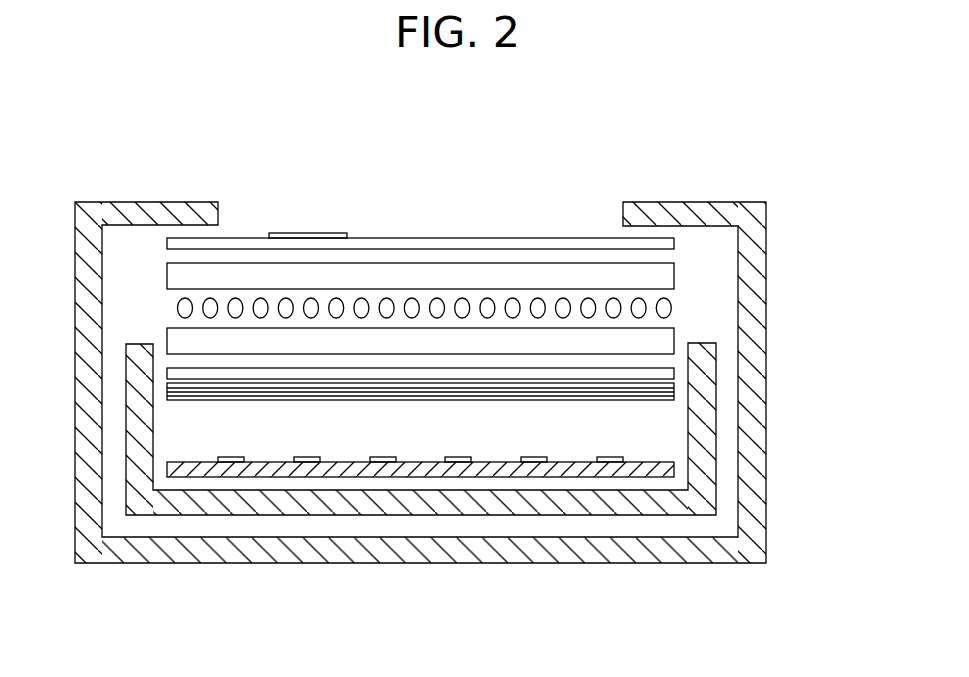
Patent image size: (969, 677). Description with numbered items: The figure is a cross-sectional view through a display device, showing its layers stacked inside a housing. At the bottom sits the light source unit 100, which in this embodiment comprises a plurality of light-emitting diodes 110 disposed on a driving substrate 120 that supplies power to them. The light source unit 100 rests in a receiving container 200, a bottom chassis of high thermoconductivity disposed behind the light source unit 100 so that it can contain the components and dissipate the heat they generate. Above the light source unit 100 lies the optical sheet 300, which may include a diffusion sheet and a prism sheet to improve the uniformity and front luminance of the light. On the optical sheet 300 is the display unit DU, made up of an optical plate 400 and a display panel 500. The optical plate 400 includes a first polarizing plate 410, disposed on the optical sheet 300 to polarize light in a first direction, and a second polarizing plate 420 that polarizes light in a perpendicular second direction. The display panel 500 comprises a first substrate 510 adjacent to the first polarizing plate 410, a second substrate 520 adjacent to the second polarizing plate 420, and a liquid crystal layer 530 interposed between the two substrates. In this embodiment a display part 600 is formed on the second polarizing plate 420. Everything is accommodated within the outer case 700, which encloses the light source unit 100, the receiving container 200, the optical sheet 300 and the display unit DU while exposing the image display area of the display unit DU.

The light source unit 100 is at (420, 546).
The light-emitting diodes 110 is at (307, 463).
The driving substrate 120 is at (259, 463).
The receiving container 200 is at (175, 502).
The optical sheet 300 is at (672, 401).
The optical plate 400 is at (420, 257).
The first polarizing plate 410 is at (558, 372).
The second polarizing plate 420 is at (518, 243).
The display panel 500 is at (420, 244).
The first substrate 510 is at (452, 332).
The second substrate 520 is at (368, 282).
The liquid crystal layer 530 is at (410, 295).
The display part 600 is at (310, 233).
The outer case 700 is at (151, 213).
The display unit DU is at (420, 234).